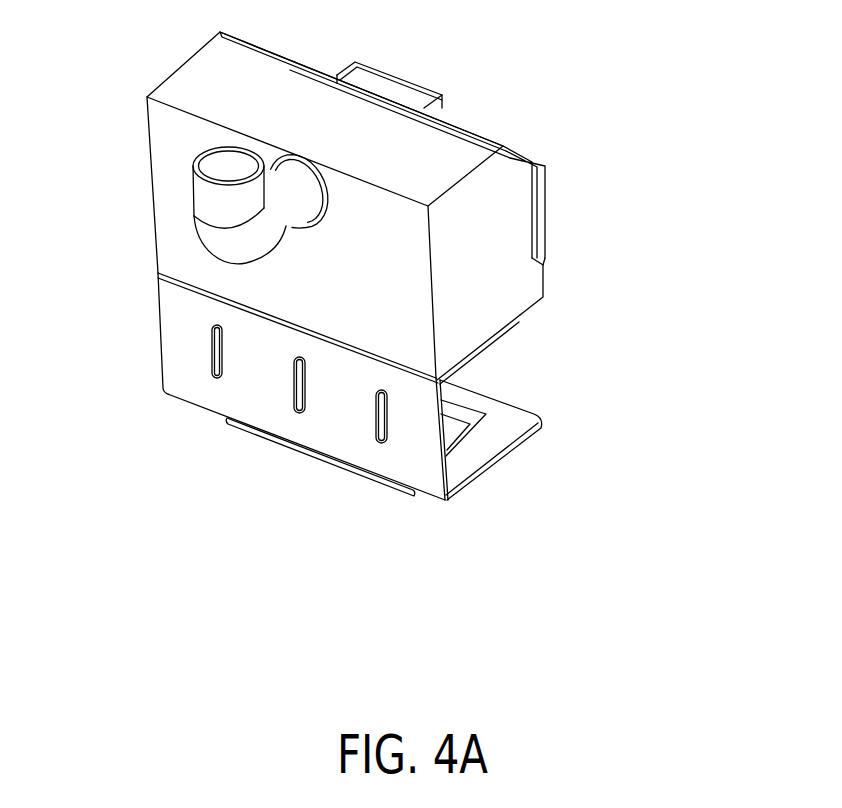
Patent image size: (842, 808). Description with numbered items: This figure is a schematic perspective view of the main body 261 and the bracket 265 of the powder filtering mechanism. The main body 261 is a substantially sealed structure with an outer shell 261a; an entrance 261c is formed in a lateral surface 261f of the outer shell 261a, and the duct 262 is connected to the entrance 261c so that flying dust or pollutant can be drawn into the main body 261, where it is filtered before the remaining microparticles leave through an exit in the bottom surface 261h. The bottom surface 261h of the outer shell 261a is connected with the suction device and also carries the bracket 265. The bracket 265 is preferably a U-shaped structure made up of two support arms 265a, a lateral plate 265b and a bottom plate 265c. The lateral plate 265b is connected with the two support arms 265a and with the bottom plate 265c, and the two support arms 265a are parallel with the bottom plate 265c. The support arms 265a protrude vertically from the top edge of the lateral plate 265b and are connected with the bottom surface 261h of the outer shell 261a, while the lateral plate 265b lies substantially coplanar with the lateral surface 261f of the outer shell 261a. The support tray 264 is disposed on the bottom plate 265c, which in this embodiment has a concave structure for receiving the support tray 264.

The main body 261 is at (455, 153).
The outer shell 261a is at (548, 220).
The entrance 261c is at (320, 167).
The lateral surface 261f is at (358, 318).
The bottom surface 261h is at (608, 285).
The duct 262 is at (220, 203).
The support tray 264 is at (482, 414).
The bracket 265 is at (647, 338).
The support arms 265a is at (500, 340).
The lateral plate 265b is at (413, 465).
The bottom plate 265c is at (497, 443).